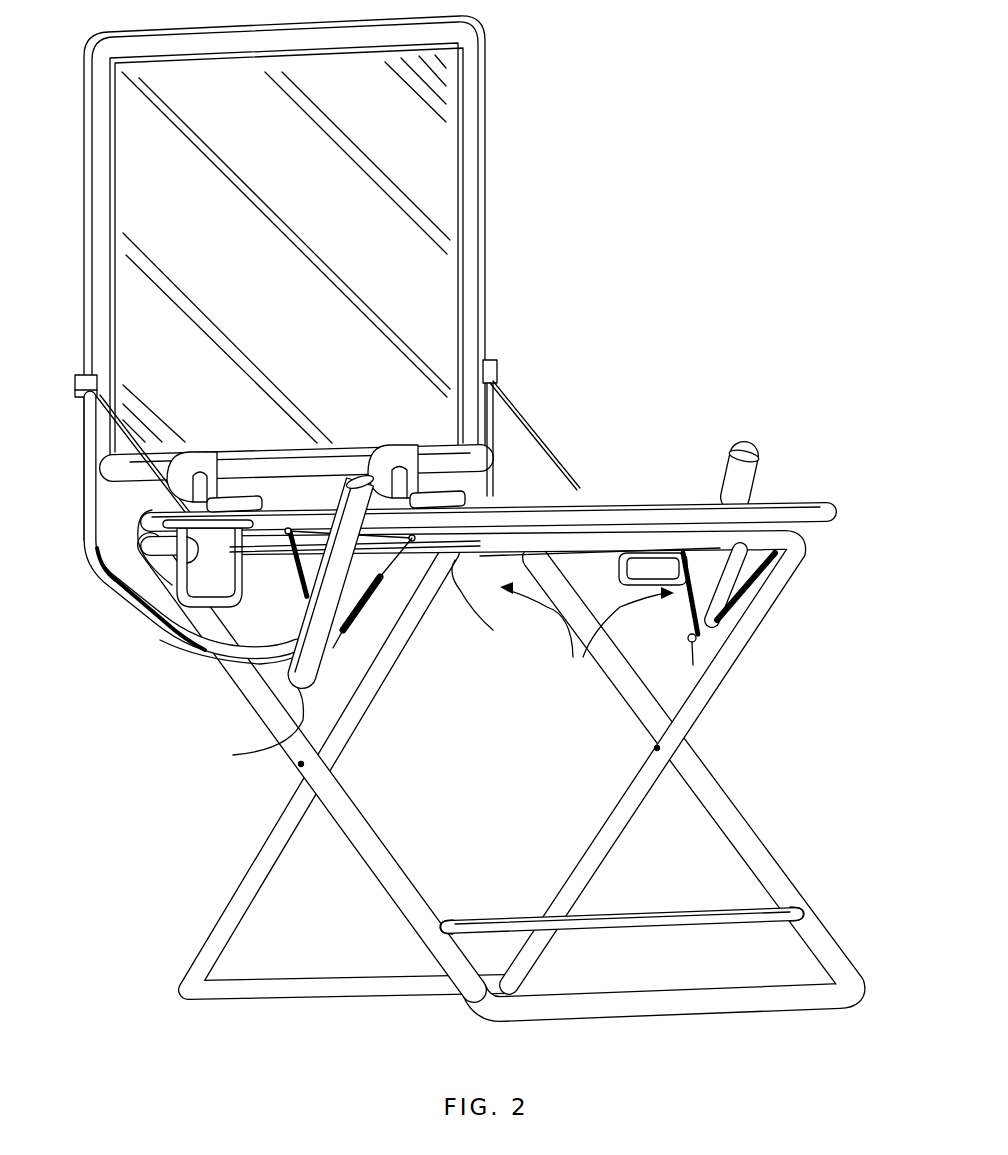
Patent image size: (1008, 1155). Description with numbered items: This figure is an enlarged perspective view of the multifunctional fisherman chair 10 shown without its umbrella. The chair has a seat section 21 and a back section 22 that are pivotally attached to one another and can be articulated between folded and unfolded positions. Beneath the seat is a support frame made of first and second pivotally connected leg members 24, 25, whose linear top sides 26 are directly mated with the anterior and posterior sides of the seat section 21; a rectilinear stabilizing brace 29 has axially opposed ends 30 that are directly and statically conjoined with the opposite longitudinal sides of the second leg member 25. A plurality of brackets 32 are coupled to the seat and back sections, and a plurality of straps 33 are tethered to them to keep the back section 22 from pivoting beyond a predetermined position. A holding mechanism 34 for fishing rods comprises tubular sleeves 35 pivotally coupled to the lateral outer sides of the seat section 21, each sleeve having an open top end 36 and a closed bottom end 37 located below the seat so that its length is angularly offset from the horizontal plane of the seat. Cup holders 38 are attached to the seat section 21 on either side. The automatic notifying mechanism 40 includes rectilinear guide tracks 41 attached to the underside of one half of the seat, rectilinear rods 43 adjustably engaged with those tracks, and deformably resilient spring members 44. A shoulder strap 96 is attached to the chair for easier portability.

The multifunctional fisherman chair 10 is at (668, 202).
The seat section 21 is at (515, 508).
The back section 22 is at (437, 180).
The first leg member 24 is at (710, 690).
The second leg member 25 is at (737, 823).
The linear top sides 26 is at (150, 550).
The rectilinear stabilizing brace 29 is at (678, 918).
The axially opposed ends 30 is at (790, 912).
The brackets 32 is at (190, 450).
The straps 33 is at (123, 448).
The holding mechanism 34 is at (368, 612).
The tubular sleeves 35 is at (307, 673).
The open top end 36 is at (362, 478).
The closed bottom end 37 is at (693, 662).
The cup holders 38 is at (150, 628).
The automatic notifying mechanism 40 is at (587, 633).
The rectilinear guide tracks 41 is at (318, 510).
The rectilinear rods 43 is at (480, 527).
The deformably resilient spring members 44 is at (297, 567).
The shoulder strap 96 is at (170, 643).